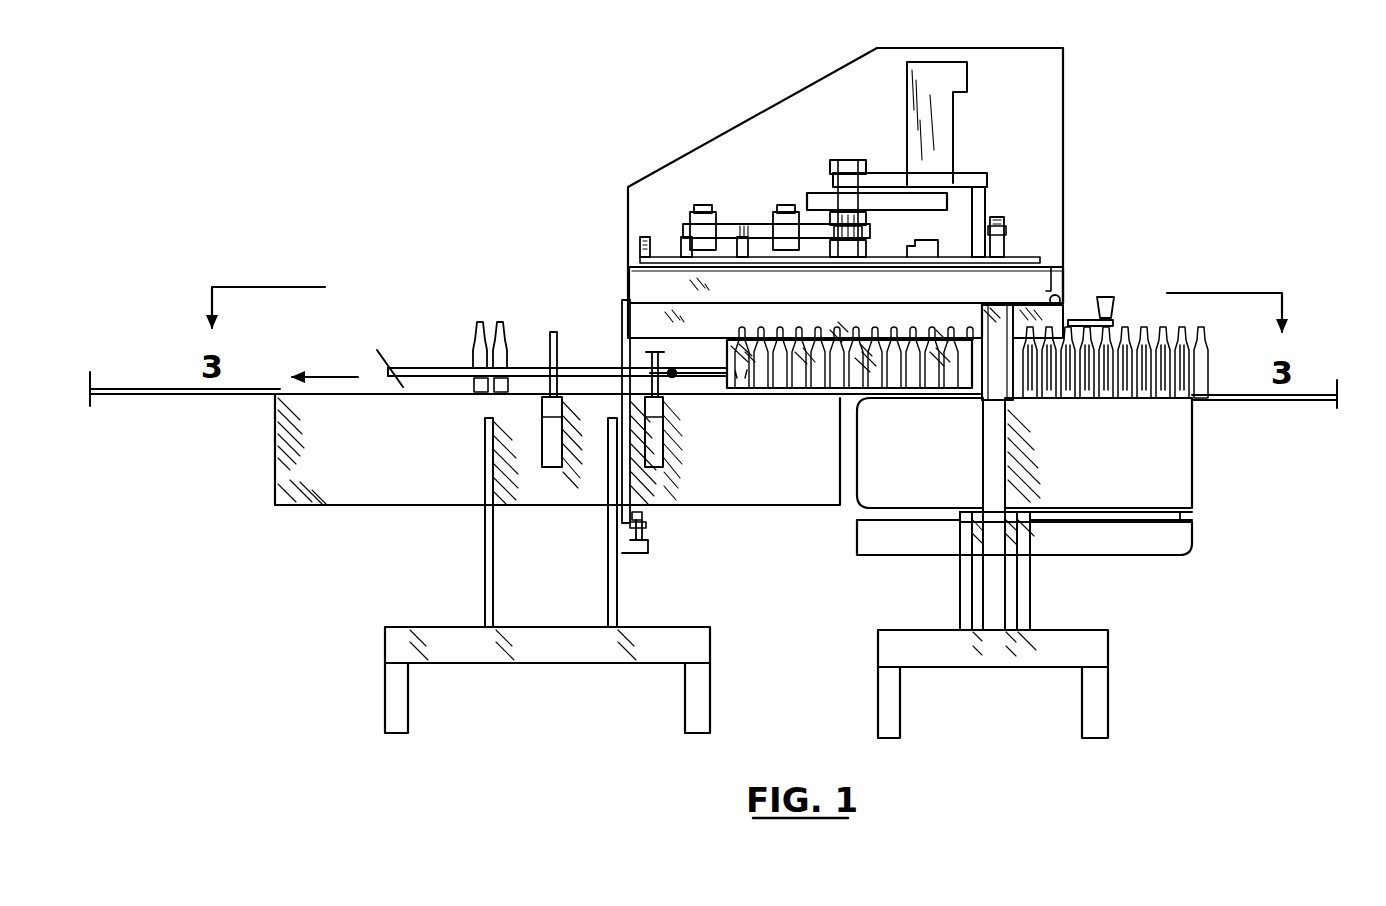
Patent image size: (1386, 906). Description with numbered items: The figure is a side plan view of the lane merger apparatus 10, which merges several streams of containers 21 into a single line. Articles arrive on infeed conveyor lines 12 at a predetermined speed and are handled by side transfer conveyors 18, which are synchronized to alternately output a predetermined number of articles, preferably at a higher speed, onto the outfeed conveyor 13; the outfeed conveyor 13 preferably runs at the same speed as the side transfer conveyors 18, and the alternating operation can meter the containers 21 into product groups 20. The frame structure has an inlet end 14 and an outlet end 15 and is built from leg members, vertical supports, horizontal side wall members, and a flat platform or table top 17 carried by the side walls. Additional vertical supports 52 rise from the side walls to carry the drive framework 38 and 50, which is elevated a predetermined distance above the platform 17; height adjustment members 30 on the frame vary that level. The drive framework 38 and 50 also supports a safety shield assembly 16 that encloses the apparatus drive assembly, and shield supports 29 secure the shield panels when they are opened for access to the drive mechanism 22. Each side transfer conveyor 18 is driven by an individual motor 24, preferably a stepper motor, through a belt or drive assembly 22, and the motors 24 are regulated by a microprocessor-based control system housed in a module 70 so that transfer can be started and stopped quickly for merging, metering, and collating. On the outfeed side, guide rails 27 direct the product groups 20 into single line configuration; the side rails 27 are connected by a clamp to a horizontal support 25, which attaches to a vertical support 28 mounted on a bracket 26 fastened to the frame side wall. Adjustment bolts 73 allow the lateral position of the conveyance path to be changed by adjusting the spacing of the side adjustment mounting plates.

The lane merger apparatus 10 is at (505, 110).
The infeed conveyor lines 12 is at (1306, 382).
The outfeed conveyor line 13 is at (147, 372).
The inlet end 14 is at (1119, 225).
The outlet end 15 is at (571, 250).
The safety shield assembly 16 is at (1063, 100).
The platform or table top 17 is at (394, 460).
The side transfer conveyors 18 is at (811, 414).
The product groups 20 is at (474, 326).
The containers 21 is at (1195, 364).
The drive assembly 22 is at (796, 184).
The motors 24 is at (944, 138).
The horizontal support 25 is at (674, 380).
The bracket 26 is at (556, 452).
The side rails 27 is at (432, 372).
The vertical support 28 is at (549, 340).
The shield supports 29 is at (1107, 304).
The height adjustment members 30 is at (672, 559).
The drive framework 38 is at (642, 318).
The drive framework 50 is at (1052, 284).
The vertical supports 52 is at (624, 356).
The module 70 is at (930, 240).
The adjustment bolts 73 is at (1000, 224).